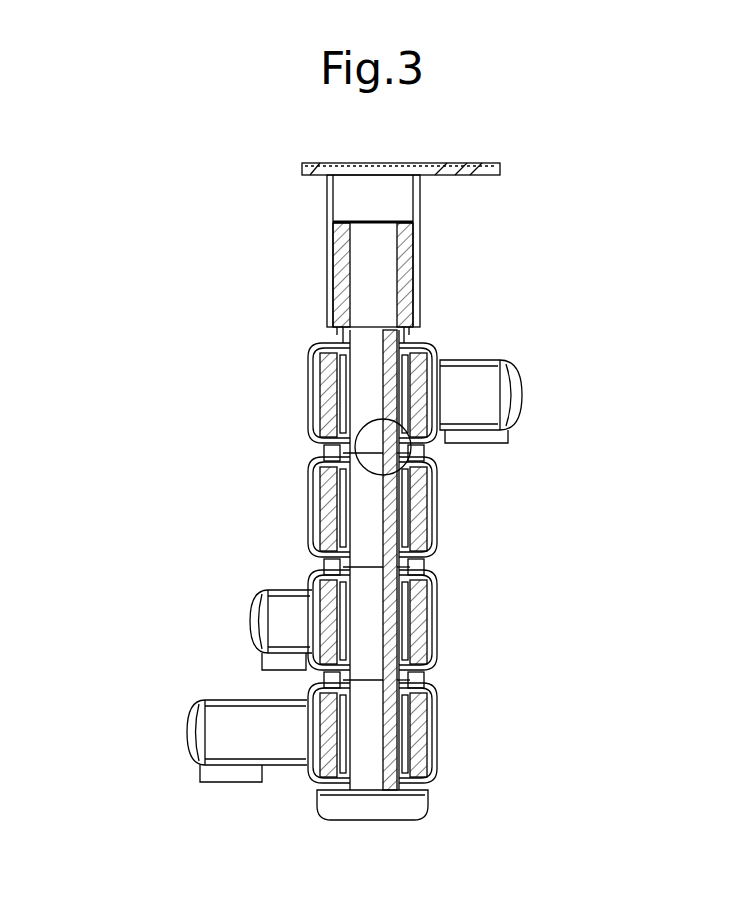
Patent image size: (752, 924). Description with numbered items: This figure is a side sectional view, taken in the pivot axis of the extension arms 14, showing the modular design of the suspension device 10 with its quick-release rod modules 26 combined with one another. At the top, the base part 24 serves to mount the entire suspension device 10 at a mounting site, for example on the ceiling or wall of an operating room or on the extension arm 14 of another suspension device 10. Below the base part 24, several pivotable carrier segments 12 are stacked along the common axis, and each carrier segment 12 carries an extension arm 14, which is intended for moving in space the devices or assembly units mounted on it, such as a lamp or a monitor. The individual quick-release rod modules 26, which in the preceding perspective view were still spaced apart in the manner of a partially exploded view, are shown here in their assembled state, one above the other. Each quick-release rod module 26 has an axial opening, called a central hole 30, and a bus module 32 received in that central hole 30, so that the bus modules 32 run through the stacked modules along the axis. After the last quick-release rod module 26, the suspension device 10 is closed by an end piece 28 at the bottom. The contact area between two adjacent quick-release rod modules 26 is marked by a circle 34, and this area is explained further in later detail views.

The suspension device 10 is at (255, 225).
The carrier segment 12 is at (282, 500).
The extension arm 14 is at (465, 407).
The base part 24 is at (375, 205).
The quick-release rod module 26 is at (343, 445).
The end piece 28 is at (370, 805).
The central hole 30 is at (367, 360).
The bus module 32 is at (378, 372).
The circle 34 is at (433, 447).